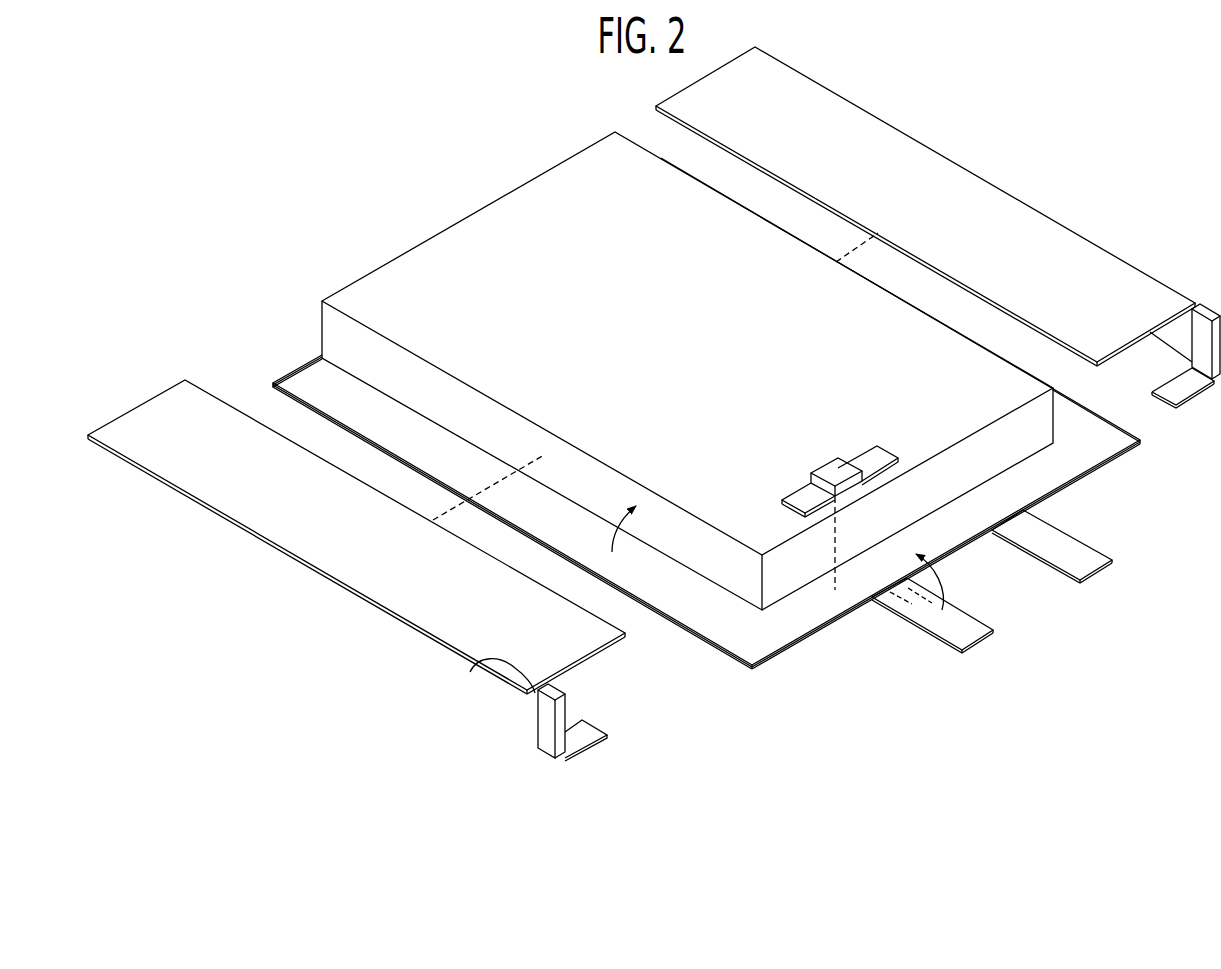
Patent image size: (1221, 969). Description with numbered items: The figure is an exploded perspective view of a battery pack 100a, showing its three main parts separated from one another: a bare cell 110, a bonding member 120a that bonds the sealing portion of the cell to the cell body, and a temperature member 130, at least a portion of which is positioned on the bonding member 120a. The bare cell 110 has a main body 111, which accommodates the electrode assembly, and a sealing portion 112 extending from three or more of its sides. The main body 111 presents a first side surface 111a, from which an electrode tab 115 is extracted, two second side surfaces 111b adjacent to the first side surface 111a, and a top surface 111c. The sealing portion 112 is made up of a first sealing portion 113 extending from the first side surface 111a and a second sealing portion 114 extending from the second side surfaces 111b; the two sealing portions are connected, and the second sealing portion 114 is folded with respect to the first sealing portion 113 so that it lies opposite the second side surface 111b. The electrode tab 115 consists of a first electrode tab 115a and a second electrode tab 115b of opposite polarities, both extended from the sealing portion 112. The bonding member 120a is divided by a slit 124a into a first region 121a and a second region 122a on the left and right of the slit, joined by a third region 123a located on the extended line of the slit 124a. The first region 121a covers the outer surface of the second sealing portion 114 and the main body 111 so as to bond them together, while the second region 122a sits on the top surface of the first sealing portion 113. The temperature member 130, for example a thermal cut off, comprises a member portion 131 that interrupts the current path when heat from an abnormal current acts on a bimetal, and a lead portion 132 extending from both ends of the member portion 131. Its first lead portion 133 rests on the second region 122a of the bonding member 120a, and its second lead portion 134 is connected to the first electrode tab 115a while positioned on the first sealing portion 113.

The battery pack 100a is at (152, 182).
The bare cell 110 is at (710, 765).
The main body 111 is at (641, 450).
The first side surface 111a is at (913, 503).
The second side surface 111b is at (337, 337).
The top surface 111c is at (483, 217).
The sealing portion 112 is at (756, 670).
The first sealing portion 113 is at (840, 634).
The second sealing portion 114 is at (664, 626).
The electrode tab 115 is at (995, 677).
The first electrode tab 115a is at (970, 633).
The second electrode tab 115b is at (1070, 567).
The bonding member 120a is at (380, 753).
The first region 121a is at (481, 701).
The second region 122a is at (547, 730).
The third region 123a is at (523, 718).
The slit 124a is at (478, 697).
The temperature member 130 is at (831, 455).
The member portion 131 is at (823, 470).
The lead portion 132 is at (940, 412).
The first lead portion 133 is at (892, 455).
The second lead portion 134 is at (856, 458).